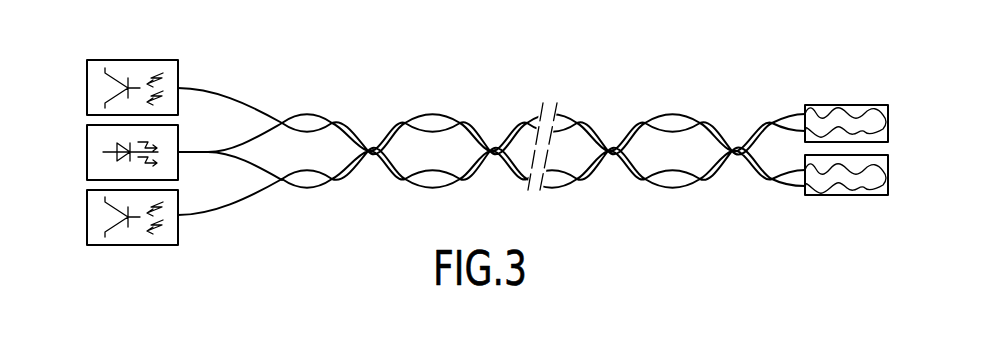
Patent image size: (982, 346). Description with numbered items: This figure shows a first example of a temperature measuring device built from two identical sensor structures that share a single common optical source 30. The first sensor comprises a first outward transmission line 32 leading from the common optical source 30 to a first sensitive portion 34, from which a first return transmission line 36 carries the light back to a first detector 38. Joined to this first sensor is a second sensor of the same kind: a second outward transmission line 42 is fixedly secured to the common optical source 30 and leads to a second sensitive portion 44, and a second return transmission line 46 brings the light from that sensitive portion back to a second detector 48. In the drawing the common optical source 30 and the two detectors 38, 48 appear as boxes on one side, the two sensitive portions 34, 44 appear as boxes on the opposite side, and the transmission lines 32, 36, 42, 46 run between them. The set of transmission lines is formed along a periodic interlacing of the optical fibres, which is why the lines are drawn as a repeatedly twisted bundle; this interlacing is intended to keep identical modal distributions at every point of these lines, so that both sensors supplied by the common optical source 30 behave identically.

The common optical source 30 is at (180, 130).
The first outward transmission line 32 is at (303, 112).
The first sensitive portion 34 is at (863, 195).
The first return transmission line 36 is at (240, 102).
The first detector 38 is at (132, 60).
The second outward transmission line 42 is at (308, 192).
The second sensitive portion 44 is at (847, 103).
The second return transmission line 46 is at (218, 208).
The second detector 48 is at (133, 247).